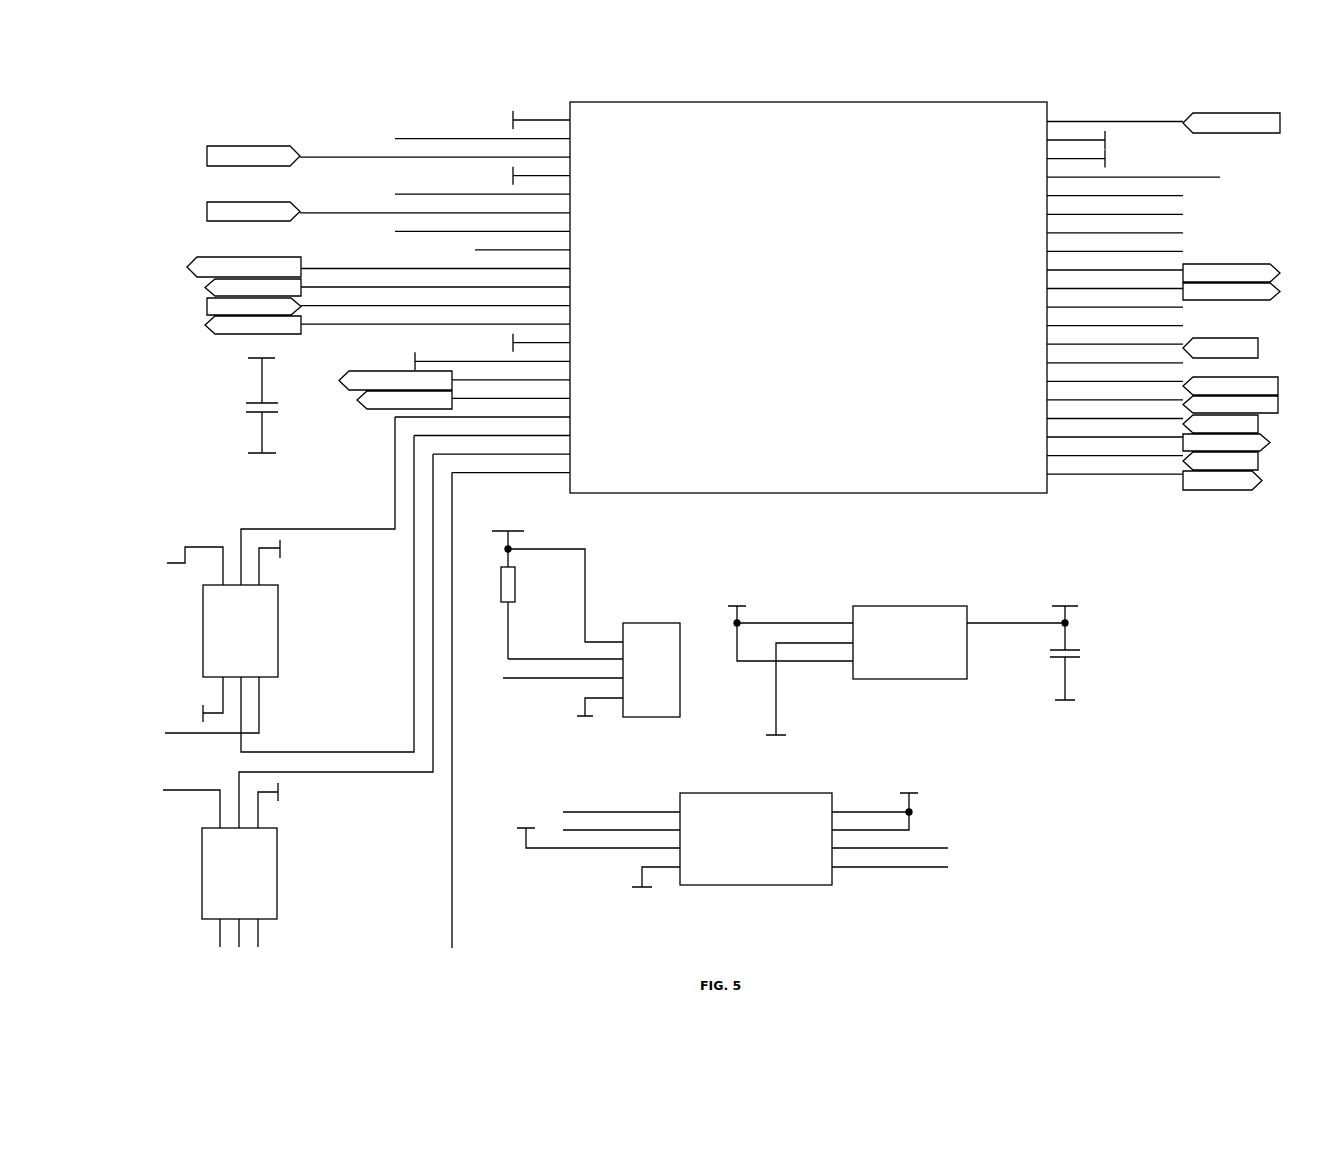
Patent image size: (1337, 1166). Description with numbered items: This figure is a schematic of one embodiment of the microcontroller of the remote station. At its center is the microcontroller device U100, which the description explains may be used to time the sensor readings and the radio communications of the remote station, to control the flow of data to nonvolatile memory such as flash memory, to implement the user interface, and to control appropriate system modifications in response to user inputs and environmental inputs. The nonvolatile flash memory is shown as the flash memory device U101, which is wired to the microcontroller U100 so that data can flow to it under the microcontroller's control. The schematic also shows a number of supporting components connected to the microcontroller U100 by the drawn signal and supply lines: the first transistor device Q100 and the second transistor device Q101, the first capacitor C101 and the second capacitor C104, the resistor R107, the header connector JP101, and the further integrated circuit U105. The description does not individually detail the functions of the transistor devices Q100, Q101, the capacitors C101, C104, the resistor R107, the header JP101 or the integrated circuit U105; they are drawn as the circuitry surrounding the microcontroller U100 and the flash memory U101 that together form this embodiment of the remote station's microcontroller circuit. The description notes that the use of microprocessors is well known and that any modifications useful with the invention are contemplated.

The MSP430F2272IRHA microcontroller U100 is at (733, 525).
The dual N-channel FET Q100 is at (251, 636).
The dual N-channel FET Q101 is at (250, 865).
The 0.1uF capacitor C101 is at (286, 406).
The 3.3uF capacitor C104 is at (1079, 653).
The 10k resistor R107 is at (552, 585).
The 4-pin header JP101 is at (591, 671).
The LP2981A-30DBVR voltage regulator U105 is at (893, 671).
The SPI flash memory U101 is at (730, 839).